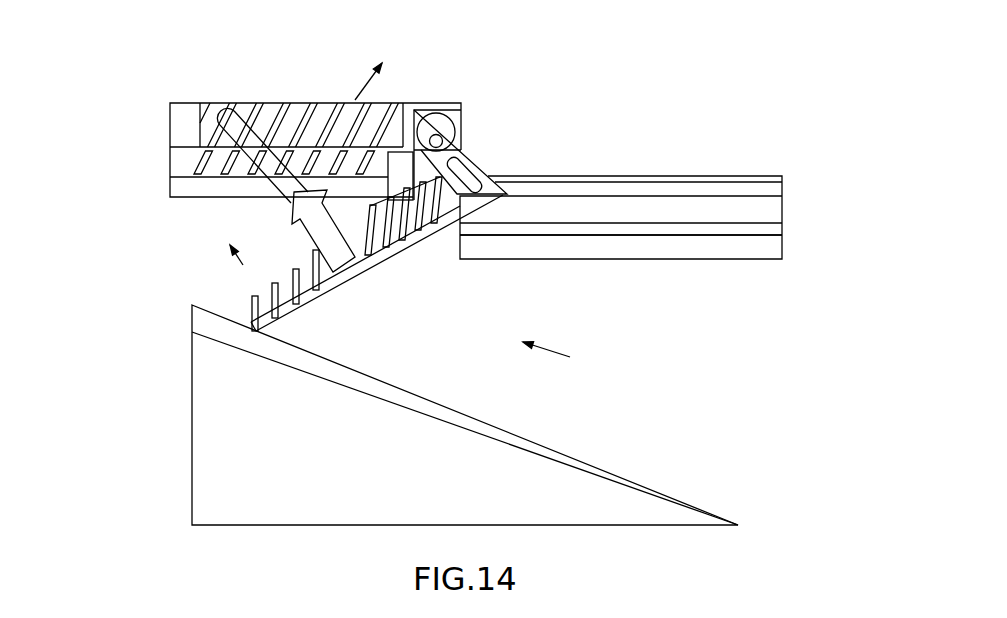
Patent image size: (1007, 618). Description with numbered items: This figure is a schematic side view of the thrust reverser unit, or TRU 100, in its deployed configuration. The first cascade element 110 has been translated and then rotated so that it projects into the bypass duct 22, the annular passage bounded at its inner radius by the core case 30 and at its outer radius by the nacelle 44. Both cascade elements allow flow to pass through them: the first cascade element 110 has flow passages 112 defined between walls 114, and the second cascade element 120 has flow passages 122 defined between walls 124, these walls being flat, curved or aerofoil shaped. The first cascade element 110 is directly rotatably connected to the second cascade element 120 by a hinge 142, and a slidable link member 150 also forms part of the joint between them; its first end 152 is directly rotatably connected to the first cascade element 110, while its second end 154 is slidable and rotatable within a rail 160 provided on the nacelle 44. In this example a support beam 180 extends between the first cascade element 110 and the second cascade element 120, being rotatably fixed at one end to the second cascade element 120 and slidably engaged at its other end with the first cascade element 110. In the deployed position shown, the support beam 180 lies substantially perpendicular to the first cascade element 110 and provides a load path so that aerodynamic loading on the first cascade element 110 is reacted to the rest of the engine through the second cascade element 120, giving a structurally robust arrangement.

The bypass duct 22 is at (694, 373).
The core case 30 is at (572, 462).
The nacelle 44 is at (735, 247).
The thrust reverser unit (TRU) 100 is at (472, 80).
The first cascade element 110 is at (308, 303).
The flow passages 112 is at (253, 298).
The walls 114 is at (312, 247).
The second cascade element 120 is at (182, 188).
The flow passages 122 is at (280, 104).
The walls 124 is at (266, 103).
The hinge 142 is at (444, 138).
The slidable link member 150 is at (560, 172).
The first end 152 is at (460, 163).
The second end 154 is at (484, 180).
The rail 160 is at (758, 188).
The support beam 180 is at (282, 176).